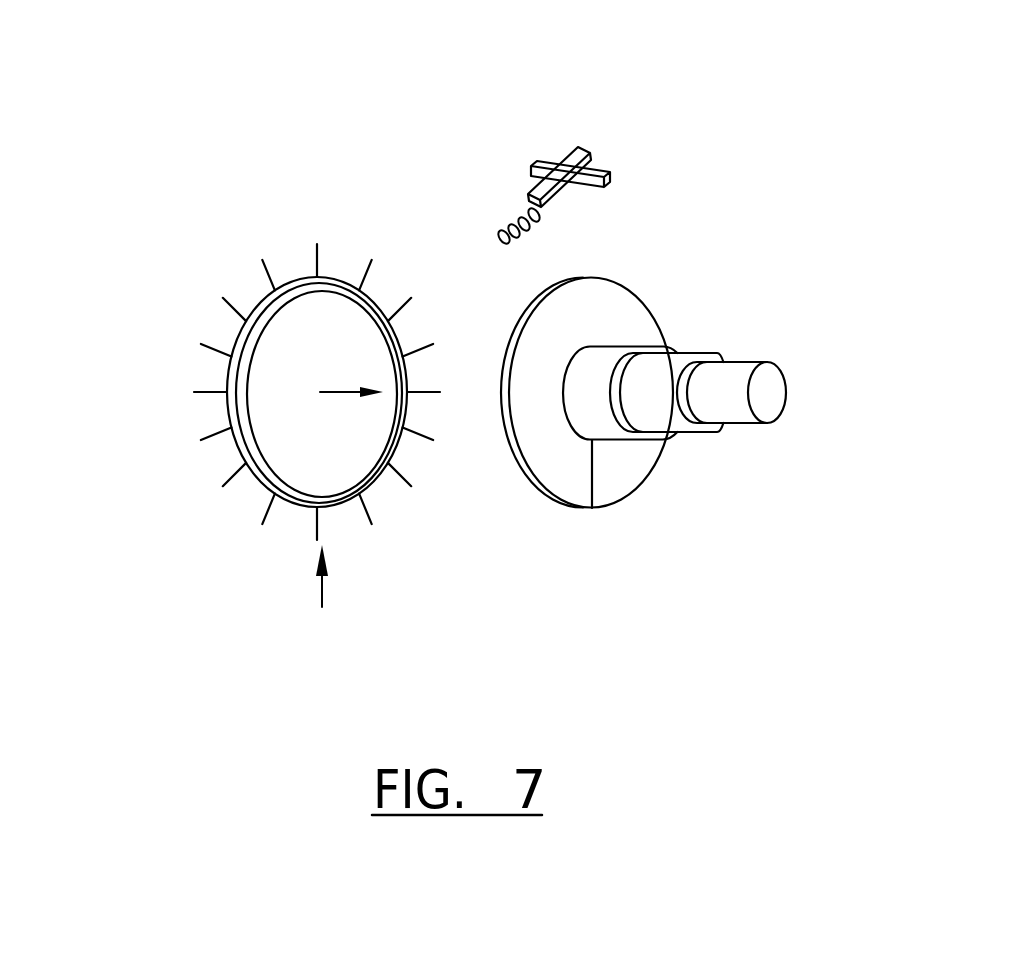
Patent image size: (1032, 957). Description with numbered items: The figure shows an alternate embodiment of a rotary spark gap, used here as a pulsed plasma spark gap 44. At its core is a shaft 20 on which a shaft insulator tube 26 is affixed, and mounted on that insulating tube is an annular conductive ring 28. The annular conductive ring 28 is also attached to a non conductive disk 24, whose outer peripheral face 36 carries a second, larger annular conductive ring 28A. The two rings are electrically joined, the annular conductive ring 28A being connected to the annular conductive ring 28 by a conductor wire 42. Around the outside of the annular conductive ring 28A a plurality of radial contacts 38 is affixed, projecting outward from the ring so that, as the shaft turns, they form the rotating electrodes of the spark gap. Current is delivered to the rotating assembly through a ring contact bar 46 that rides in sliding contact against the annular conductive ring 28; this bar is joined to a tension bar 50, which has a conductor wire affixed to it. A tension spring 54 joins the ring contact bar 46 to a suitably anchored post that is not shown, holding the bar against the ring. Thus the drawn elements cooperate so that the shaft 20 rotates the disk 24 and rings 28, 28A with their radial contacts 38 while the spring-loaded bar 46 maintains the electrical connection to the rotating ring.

The shaft 20 is at (769, 392).
The non conductive disk 24 is at (633, 308).
The shaft insulator tube 26 is at (703, 427).
The annular conductive ring 28 is at (585, 398).
The annular conductive ring 28A is at (238, 338).
The peripheral face 36 is at (517, 467).
The radial contacts 38 is at (197, 443).
The conductor wire 42 is at (590, 490).
The pulsed plasma spark gap 44 is at (324, 591).
The ring contact bar 46 is at (595, 170).
The tension bar 50 is at (553, 160).
The tension spring 54 is at (502, 233).